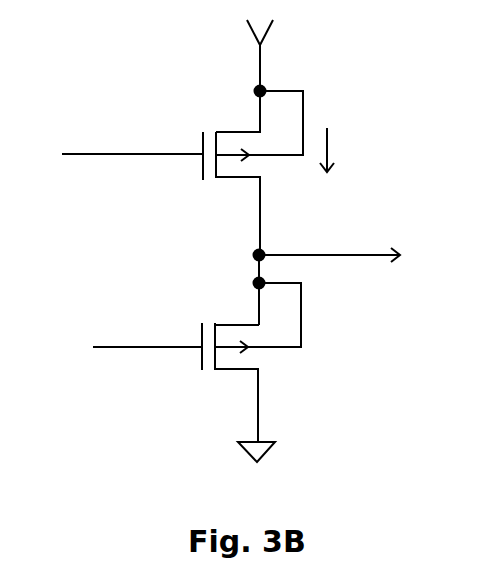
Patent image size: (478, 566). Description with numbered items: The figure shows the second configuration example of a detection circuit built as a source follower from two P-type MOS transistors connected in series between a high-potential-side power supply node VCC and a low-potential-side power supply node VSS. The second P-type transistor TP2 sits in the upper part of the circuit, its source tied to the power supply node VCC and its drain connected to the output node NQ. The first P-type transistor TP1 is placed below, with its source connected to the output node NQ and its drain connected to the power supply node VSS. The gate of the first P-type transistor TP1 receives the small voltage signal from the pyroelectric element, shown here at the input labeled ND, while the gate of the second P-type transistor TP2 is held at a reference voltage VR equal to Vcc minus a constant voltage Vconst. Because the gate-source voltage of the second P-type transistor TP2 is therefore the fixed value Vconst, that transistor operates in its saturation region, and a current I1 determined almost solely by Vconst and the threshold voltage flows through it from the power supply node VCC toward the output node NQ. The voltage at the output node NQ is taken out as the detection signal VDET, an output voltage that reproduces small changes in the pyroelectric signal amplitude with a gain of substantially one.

The second P-type transistor TP2 is at (243, 171).
The first P-type transistor TP1 is at (241, 348).
The output node NQ is at (276, 243).
The current I1 is at (337, 150).
The second power supply node VCC is at (284, 55).
The first power supply node VSS is at (273, 458).
The reference voltage VR is at (114, 165).
The node ND signal ND is at (147, 359).
The detection signal VDET is at (358, 256).